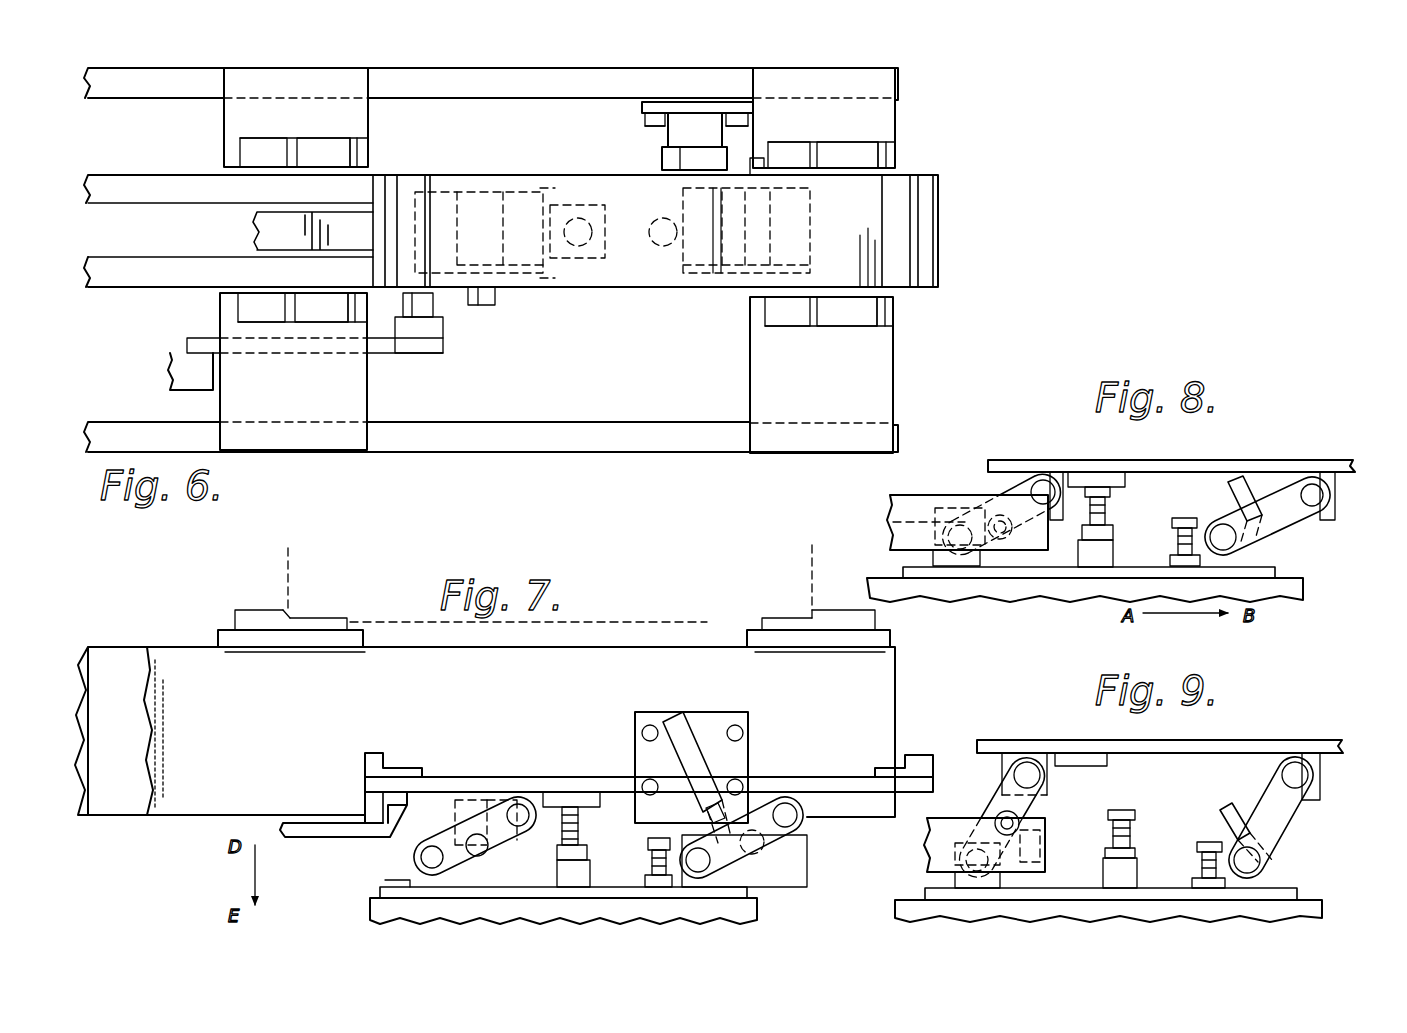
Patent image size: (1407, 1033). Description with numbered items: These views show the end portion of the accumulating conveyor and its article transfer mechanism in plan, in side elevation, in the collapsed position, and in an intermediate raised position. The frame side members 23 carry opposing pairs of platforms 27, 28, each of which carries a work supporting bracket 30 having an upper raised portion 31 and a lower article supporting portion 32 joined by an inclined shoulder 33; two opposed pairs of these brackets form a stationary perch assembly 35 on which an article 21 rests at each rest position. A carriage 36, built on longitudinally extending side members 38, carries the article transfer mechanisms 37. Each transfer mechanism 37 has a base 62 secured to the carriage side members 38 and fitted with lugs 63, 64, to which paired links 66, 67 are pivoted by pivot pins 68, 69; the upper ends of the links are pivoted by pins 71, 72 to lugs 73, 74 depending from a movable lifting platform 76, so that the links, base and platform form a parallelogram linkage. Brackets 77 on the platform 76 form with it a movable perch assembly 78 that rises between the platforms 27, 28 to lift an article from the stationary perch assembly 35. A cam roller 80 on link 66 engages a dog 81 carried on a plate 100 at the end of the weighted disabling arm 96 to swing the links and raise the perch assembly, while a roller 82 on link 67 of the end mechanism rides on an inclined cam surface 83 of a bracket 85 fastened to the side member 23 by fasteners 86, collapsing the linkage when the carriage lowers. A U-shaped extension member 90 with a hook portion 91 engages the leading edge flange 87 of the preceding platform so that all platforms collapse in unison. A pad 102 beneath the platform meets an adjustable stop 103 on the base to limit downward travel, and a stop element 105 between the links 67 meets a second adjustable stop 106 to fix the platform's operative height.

In FIG. 7, the article 21 is at (815, 558).
In FIG. 6, the side member 23 is at (545, 58).
In FIG. 7, the side member 23 is at (108, 660).
In FIG. 6, the platform 27 is at (370, 395).
In FIG. 6, the platform 28 is at (352, 72).
In FIG. 7, the platform 28 is at (218, 635).
In FIG. 6, the work supporting bracket 30 is at (352, 150).
In FIG. 7, the work supporting bracket 30 is at (293, 607).
In FIG. 6, the upper raised portion 31 is at (268, 128).
In FIG. 7, the upper raised portion 31 is at (245, 610).
In FIG. 6, the lower article supporting portion 32 is at (332, 125).
In FIG. 7, the lower article supporting portion 32 is at (350, 622).
In FIG. 6, the inclined shoulder 33 is at (292, 138).
In FIG. 7, the inclined shoulder 33 is at (325, 615).
In FIG. 7, the stationary perch assembly 35 is at (372, 632).
In FIG. 6, the carriage 36 is at (143, 173).
In FIG. 7, the article transfer mechanism 37 is at (495, 752).
In FIG. 8, the article transfer mechanism 37 is at (1340, 447).
In FIG. 9, the article transfer mechanism 37 is at (1283, 722).
In FIG. 6, the carriage side member 38 is at (100, 205).
In FIG. 7, the carriage side member 38 is at (308, 902).
In FIG. 8, the carriage side member 38 is at (1092, 602).
In FIG. 9, the carriage side member 38 is at (1320, 910).
In FIG. 7, the base 62 is at (730, 905).
In FIG. 8, the base 62 is at (1303, 583).
In FIG. 9, the base 62 is at (1322, 893).
In FIG. 6, the lug 63 is at (458, 225).
In FIG. 7, the lug 63 is at (385, 882).
In FIG. 8, the lug 63 is at (945, 566).
In FIG. 9, the lug 63 is at (955, 880).
In FIG. 6, the lug 64 is at (683, 258).
In FIG. 7, the lug 64 is at (745, 893).
In FIG. 8, the lug 64 is at (1275, 572).
In FIG. 9, the lug 64 is at (1290, 888).
In FIG. 6, the link 66 is at (560, 188).
In FIG. 7, the link 66 is at (470, 818).
In FIG. 8, the link 66 is at (1005, 492).
In FIG. 9, the link 66 is at (1040, 808).
In FIG. 6, the link 67 is at (815, 192).
In FIG. 7, the link 67 is at (805, 835).
In FIG. 8, the link 67 is at (1285, 540).
In FIG. 9, the link 67 is at (1300, 808).
In FIG. 7, the pivot pin 68 is at (420, 858).
In FIG. 8, the pivot pin 68 is at (893, 527).
In FIG. 9, the pivot pin 68 is at (927, 848).
In FIG. 7, the pivot pin 69 is at (770, 870).
In FIG. 8, the pivot pin 69 is at (1265, 598).
In FIG. 9, the pivot pin 69 is at (1280, 860).
In FIG. 7, the pin 71 is at (518, 804).
In FIG. 8, the pin 71 is at (1055, 476).
In FIG. 9, the pin 71 is at (1040, 760).
In FIG. 7, the pin 72 is at (790, 805).
In FIG. 8, the pin 72 is at (1325, 495).
In FIG. 9, the pin 72 is at (1310, 778).
In FIG. 6, the lug 73 is at (503, 262).
In FIG. 7, the lug 73 is at (490, 800).
In FIG. 8, the lug 73 is at (1022, 476).
In FIG. 9, the lug 73 is at (1010, 758).
In FIG. 6, the lug 74 is at (815, 215).
In FIG. 7, the lug 74 is at (770, 795).
In FIG. 8, the lug 74 is at (1282, 475).
In FIG. 9, the lug 74 is at (1320, 768).
In FIG. 6, the lifting platform 76 is at (650, 288).
In FIG. 8, the lifting platform 76 is at (1165, 450).
In FIG. 9, the lifting platform 76 is at (1160, 740).
In FIG. 6, the bracket 77 is at (380, 180).
In FIG. 7, the bracket 77 is at (372, 752).
In FIG. 7, the movable perch assembly 78 is at (400, 750).
In FIG. 6, the cam roller 80 is at (495, 305).
In FIG. 7, the cam roller 80 is at (480, 865).
In FIG. 8, the cam roller 80 is at (985, 520).
In FIG. 9, the cam roller 80 is at (995, 820).
In FIG. 6, the dog 81 is at (418, 330).
In FIG. 8, the dog 81 is at (1028, 545).
In FIG. 9, the dog 81 is at (1020, 850).
In FIG. 6, the roller 82 is at (755, 160).
In FIG. 7, the roller 82 is at (790, 858).
In FIG. 6, the inclined cam surface 83 is at (685, 150).
In FIG. 7, the inclined cam surface 83 is at (685, 720).
In FIG. 6, the bracket 85 is at (720, 102).
In FIG. 7, the bracket 85 is at (715, 715).
In FIG. 6, the fastener 86 is at (648, 120).
In FIG. 7, the fastener 86 is at (648, 728).
In FIG. 7, the leading edge flange 87 is at (365, 782).
In FIG. 6, the extension member 90 is at (258, 225).
In FIG. 7, the extension member 90 is at (290, 838).
In FIG. 7, the hook portion 91 is at (365, 800).
In FIG. 6, the disabling arm 96 is at (190, 343).
In FIG. 8, the disabling arm 96 is at (905, 495).
In FIG. 9, the disabling arm 96 is at (1045, 860).
In FIG. 6, the plate 100 is at (410, 335).
In FIG. 6, the pad 102 is at (612, 195).
In FIG. 7, the pad 102 is at (560, 792).
In FIG. 8, the pad 102 is at (1100, 472).
In FIG. 9, the pad 102 is at (1085, 753).
In FIG. 6, the adjustable stop 103 is at (552, 258).
In FIG. 7, the adjustable stop 103 is at (575, 805).
In FIG. 8, the adjustable stop 103 is at (1112, 508).
In FIG. 9, the adjustable stop 103 is at (1125, 810).
In FIG. 6, the stop element 105 is at (683, 205).
In FIG. 7, the stop element 105 is at (700, 812).
In FIG. 8, the stop element 105 is at (1240, 475).
In FIG. 9, the stop element 105 is at (1228, 805).
In FIG. 6, the second adjustable stop 106 is at (650, 232).
In FIG. 7, the second adjustable stop 106 is at (645, 852).
In FIG. 8, the second adjustable stop 106 is at (1175, 542).
In FIG. 9, the second adjustable stop 106 is at (1195, 845).